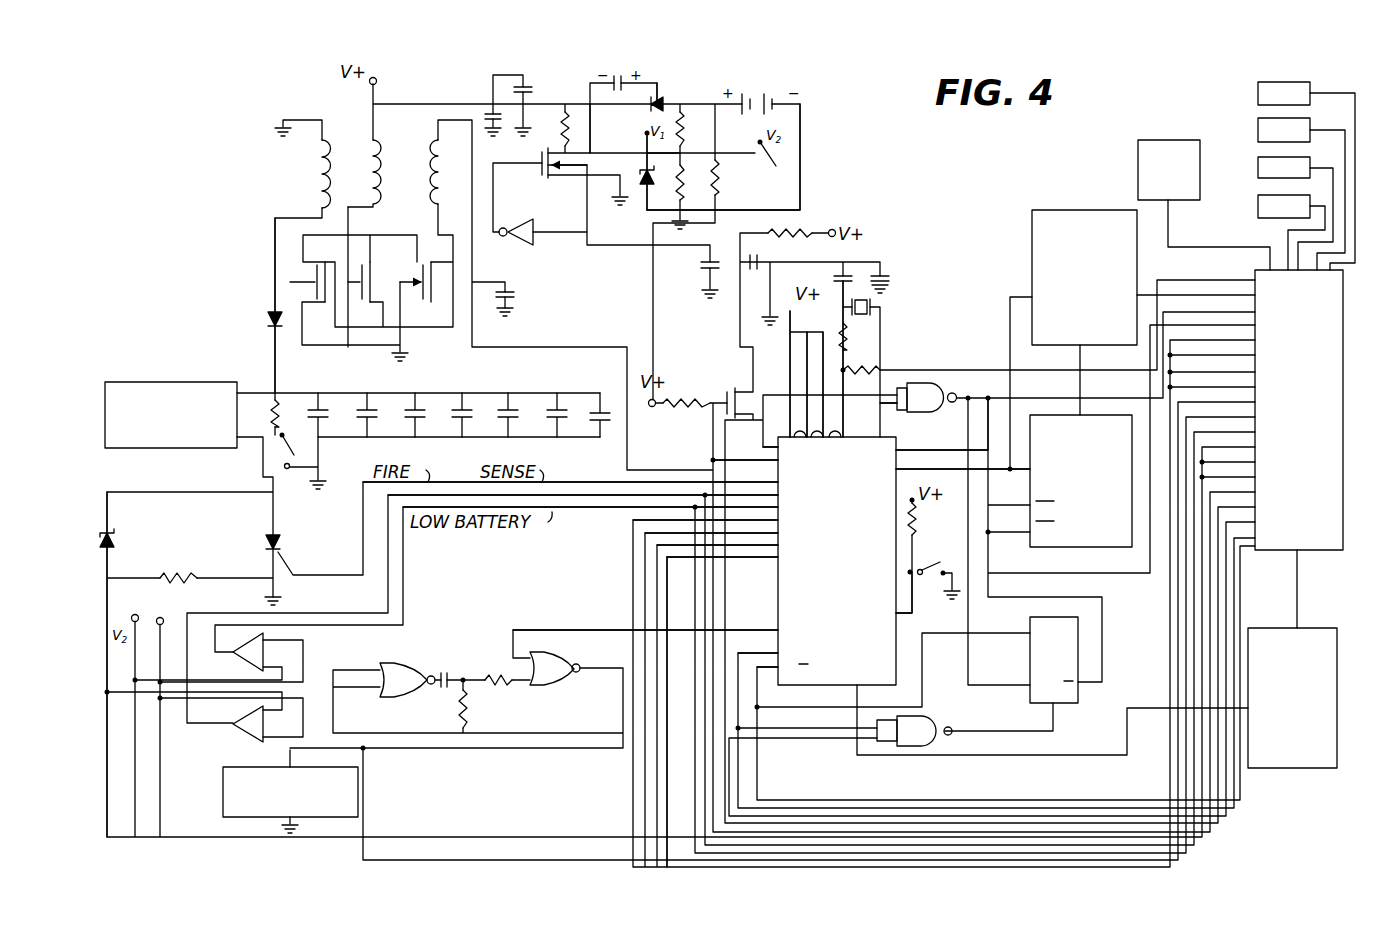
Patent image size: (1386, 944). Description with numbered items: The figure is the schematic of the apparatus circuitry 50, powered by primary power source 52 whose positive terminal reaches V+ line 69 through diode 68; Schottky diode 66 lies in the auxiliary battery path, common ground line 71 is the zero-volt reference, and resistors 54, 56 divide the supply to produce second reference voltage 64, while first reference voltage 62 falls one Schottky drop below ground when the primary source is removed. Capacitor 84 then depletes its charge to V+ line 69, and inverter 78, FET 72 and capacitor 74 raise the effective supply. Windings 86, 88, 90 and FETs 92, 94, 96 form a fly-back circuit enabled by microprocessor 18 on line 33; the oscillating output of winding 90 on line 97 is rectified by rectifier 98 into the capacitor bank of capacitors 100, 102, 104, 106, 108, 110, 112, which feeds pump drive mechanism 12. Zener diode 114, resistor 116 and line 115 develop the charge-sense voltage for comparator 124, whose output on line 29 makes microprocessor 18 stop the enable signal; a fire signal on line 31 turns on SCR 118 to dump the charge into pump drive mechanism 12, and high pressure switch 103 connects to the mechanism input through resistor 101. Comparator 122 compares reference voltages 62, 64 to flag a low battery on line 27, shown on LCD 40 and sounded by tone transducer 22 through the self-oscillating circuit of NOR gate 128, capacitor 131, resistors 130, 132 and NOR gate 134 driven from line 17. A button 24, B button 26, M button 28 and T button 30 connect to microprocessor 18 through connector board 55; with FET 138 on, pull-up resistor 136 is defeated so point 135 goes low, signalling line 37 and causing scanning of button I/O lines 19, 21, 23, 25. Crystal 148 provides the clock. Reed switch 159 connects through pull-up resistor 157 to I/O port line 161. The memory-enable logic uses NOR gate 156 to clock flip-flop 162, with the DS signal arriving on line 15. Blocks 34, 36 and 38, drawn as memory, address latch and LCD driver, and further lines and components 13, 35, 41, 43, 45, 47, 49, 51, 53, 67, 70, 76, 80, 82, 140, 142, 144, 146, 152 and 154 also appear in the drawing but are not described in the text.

The pump drive mechanism 12 is at (189, 382).
The microprocessor pin 13 is at (764, 682).
The line 15 is at (758, 652).
The line 17 is at (762, 628).
The microprocessor 18 is at (860, 645).
The button I/O line 19 is at (770, 564).
The button I/O line 21 is at (753, 558).
The tone transducer 22 is at (223, 767).
The button I/O line 23 is at (731, 557).
The A button 24 is at (1284, 93).
The button I/O line 25 is at (725, 537).
The B button 26 is at (1284, 130).
The line 27 is at (719, 521).
The M button 28 is at (1284, 168).
The line 29 is at (604, 504).
The T button 30 is at (1284, 206).
The line 31 is at (598, 487).
The line 33 is at (583, 472).
The memory 34 is at (1083, 495).
The microprocessor pin 35 is at (763, 460).
The address latch 36 is at (1092, 325).
The line 37 is at (763, 446).
The LCD driver 38 is at (1302, 741).
The LCD 40 is at (1138, 162).
The microprocessor pin 41 is at (799, 386).
The microprocessor pin 43 is at (819, 396).
The microprocessor pin 45 is at (839, 396).
The microprocessor pin 47 is at (845, 437).
The microprocessor pin 49 is at (880, 406).
The apparatus circuitry 50 is at (934, 182).
The microprocessor pin 51 is at (928, 450).
The primary power source 52 is at (774, 103).
The microprocessor pin 53 is at (924, 469).
The resistor 54 is at (690, 122).
The connector board 55 is at (1306, 303).
The resistor 56 is at (690, 187).
The reference voltage V-1 62 is at (643, 136).
The reference voltage V-2 64 is at (454, 382).
The Schottky diode 66 is at (628, 100).
The conductor 67 is at (702, 104).
The diode 68 is at (660, 106).
The V+ line 69 is at (592, 110).
The resistor 70 is at (562, 134).
The common ground line 71 is at (800, 154).
The field effect transistor 72 is at (540, 168).
The capacitor 74 is at (516, 296).
The resistor 76 is at (722, 172).
The inverter 78 is at (527, 243).
The capacitor 80 is at (704, 267).
The capacitor 82 is at (531, 89).
The capacitor 84 is at (492, 115).
The winding 86 is at (436, 152).
The winding 88 is at (367, 134).
The winding 90 is at (324, 194).
The FET 92 is at (434, 300).
The FET 94 is at (370, 264).
The FET 96 is at (301, 270).
The line 97 is at (273, 226).
The rectifier 98 is at (268, 318).
The capacitor 100 is at (331, 404).
The resistor 101 is at (268, 395).
The capacitor 102 is at (381, 404).
The high pressure switch 103 is at (287, 469).
The capacitor 104 is at (428, 404).
The capacitor 106 is at (476, 404).
The capacitor 108 is at (524, 404).
The capacitor 110 is at (571, 404).
The capacitor 112 is at (608, 432).
The zener diode 114 is at (116, 540).
The line 115 is at (104, 628).
The resistor 116 is at (179, 563).
The silicon controlled rectifier 118 is at (280, 543).
The comparator 122 is at (233, 654).
The comparator 124 is at (233, 726).
The NOR gate 128 is at (398, 663).
The resistor 130 is at (480, 709).
The capacitor 131 is at (447, 672).
The resistor 132 is at (515, 684).
The NOR gate 134 is at (554, 654).
The point 135 is at (705, 406).
The pull-up resistor 136 is at (652, 406).
The FET 138 is at (730, 384).
The resistor 140 is at (812, 230).
The capacitor 142 is at (761, 258).
The capacitor 144 is at (856, 268).
The capacitor 146 is at (890, 280).
The crystal 148 is at (874, 306).
The resistor 152 is at (857, 340).
The resistor 154 is at (865, 370).
The NOR gate 156 is at (926, 383).
The pull-up resistor 157 is at (916, 512).
The reed switch 159 is at (926, 566).
The I/O port line 161 is at (912, 596).
The flip-flop 162 is at (1030, 646).